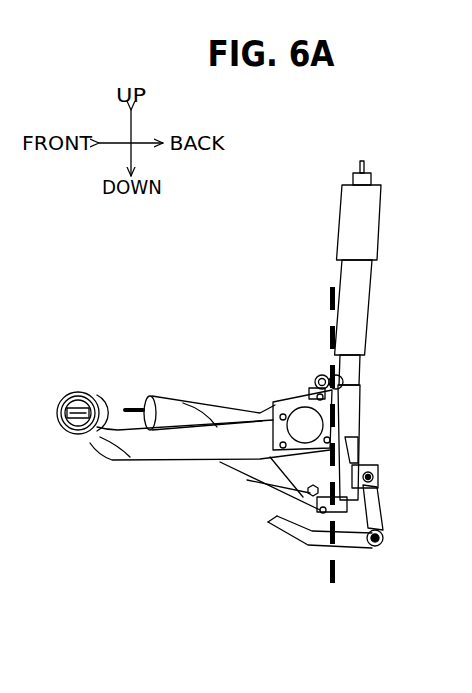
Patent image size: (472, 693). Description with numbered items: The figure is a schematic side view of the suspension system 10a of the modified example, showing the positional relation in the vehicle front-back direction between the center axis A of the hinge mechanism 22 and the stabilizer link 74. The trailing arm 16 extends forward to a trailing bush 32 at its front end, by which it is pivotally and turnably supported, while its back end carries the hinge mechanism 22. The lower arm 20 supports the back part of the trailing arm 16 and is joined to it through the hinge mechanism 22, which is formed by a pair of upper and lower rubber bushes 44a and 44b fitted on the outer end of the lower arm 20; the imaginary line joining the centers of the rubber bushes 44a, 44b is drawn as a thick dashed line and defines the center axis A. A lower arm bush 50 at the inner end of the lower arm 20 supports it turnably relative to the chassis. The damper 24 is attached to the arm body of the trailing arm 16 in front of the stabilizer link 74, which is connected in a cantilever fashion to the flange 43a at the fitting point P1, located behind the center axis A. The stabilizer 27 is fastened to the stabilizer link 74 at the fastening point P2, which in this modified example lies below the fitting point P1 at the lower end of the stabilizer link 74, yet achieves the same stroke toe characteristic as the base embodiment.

The suspension system 10a is at (200, 320).
The trailing arm 16 is at (147, 470).
The lower arm 20 is at (250, 485).
The hinge mechanism 22 is at (350, 373).
The damper 24 is at (375, 305).
The stabilizer 27 is at (310, 548).
The trailing bush 32 is at (72, 440).
The flange 43a is at (378, 473).
The upper rubber bush 44a is at (315, 375).
The lower rubber bush 44b is at (307, 500).
The lower arm bush 50 is at (141, 400).
The stabilizer link 74 is at (380, 505).
The center axis of the hinge mechanism A is at (323, 298).
The fitting point P1 is at (370, 465).
The fastening point P2 is at (385, 538).